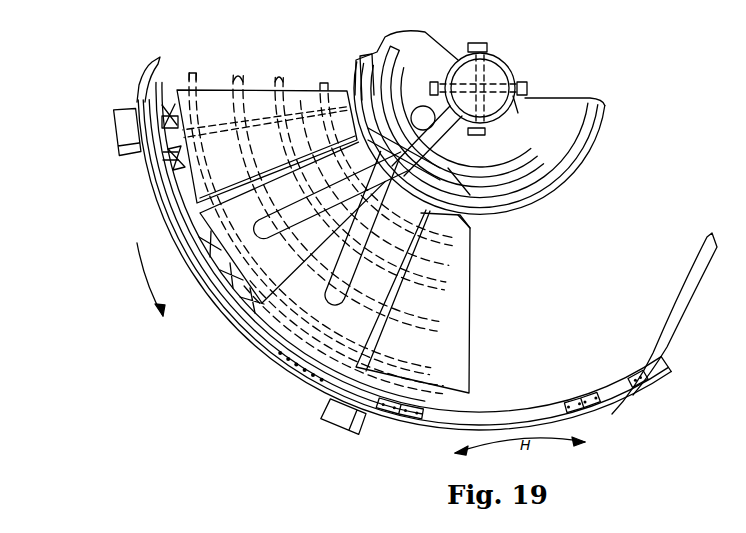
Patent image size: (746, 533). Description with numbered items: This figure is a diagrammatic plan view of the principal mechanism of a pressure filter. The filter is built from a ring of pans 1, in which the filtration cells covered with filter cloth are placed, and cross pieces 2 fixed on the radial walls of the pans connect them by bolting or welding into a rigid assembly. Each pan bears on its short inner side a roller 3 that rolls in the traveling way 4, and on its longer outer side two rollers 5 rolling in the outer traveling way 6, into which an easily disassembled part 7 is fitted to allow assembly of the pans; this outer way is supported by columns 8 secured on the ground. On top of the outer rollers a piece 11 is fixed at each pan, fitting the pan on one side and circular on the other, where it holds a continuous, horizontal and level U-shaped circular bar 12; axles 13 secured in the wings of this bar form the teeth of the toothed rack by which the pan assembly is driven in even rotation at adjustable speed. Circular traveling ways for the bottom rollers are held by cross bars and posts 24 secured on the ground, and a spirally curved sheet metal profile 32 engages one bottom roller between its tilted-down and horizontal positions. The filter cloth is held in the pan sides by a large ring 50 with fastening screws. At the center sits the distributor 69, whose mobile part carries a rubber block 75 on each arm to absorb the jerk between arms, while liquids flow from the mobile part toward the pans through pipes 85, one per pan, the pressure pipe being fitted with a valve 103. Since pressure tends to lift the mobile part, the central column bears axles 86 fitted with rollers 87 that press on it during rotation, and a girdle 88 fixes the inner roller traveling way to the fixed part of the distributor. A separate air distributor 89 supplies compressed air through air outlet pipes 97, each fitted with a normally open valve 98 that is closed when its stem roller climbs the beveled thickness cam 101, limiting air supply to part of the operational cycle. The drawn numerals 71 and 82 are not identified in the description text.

The pan 1 is at (323, 241).
The cross piece 2 is at (336, 193).
The roller 3 is at (357, 85).
The traveling way 4 is at (368, 60).
The roller 5 is at (165, 170).
The outer traveling way 6 is at (143, 80).
The part 7 is at (533, 415).
The column 8 is at (127, 123).
The piece 11 is at (270, 327).
The U-shaped circular bar 12 is at (243, 325).
The axle 13 is at (232, 78).
The cross bars and posts 24 is at (362, 178).
The profile 32 is at (690, 297).
The ring 50 is at (283, 357).
The distributor 69 is at (433, 48).
The roller 71 is at (424, 105).
The rubber block 75 is at (463, 226).
The bearing ring 82 is at (492, 57).
The pipe 85 is at (332, 228).
The axle 86 is at (525, 113).
The roller 87 is at (527, 85).
The girdle 88 is at (592, 98).
The air distributor 89 is at (497, 75).
The air outlet pipe 97 is at (447, 128).
The valve 98 is at (450, 172).
The thickness cam 101 is at (570, 73).
The valve 103 is at (300, 181).